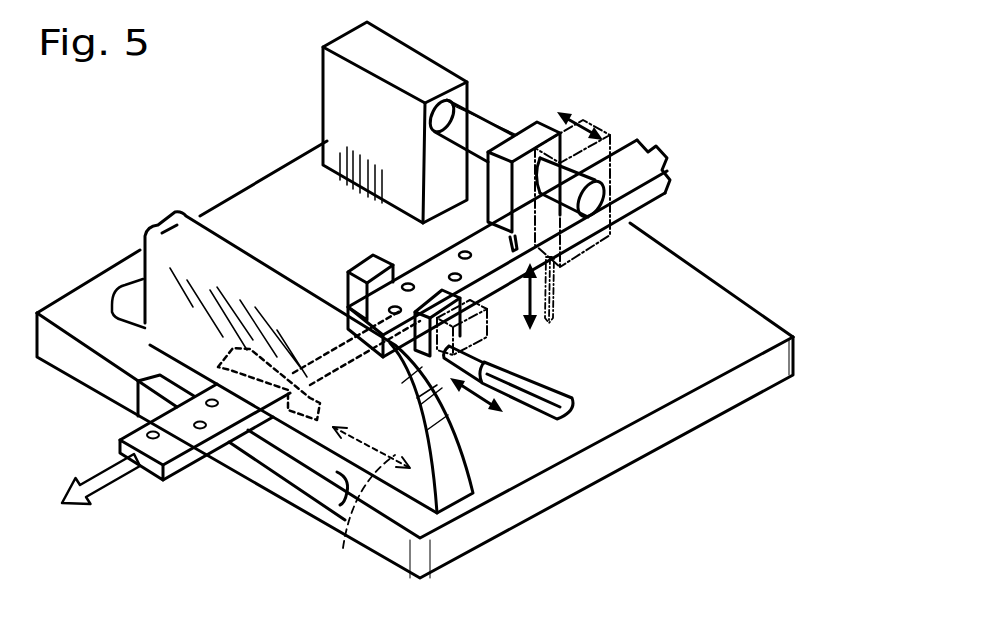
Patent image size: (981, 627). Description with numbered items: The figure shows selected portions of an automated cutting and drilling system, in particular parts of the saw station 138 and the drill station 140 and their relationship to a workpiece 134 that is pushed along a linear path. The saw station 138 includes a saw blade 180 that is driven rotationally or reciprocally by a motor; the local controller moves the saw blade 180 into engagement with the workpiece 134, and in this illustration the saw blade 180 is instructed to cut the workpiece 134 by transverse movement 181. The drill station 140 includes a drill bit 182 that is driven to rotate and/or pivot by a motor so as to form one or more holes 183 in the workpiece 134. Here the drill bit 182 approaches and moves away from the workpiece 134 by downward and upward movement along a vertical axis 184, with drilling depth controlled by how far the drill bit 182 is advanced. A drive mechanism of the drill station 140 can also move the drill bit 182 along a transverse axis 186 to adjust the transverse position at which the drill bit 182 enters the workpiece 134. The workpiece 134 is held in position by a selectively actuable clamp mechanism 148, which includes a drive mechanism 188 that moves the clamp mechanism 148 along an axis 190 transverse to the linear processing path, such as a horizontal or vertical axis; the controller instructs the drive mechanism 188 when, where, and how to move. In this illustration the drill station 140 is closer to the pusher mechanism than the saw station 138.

The workpiece 134 is at (380, 300).
The saw station 138 is at (140, 228).
The drill station 140 is at (518, 82).
The clamp mechanism 148 is at (518, 346).
The saw blade 180 is at (325, 396).
The transverse movement 181 is at (359, 514).
The drill bit 182 is at (511, 246).
The holes 183 is at (452, 275).
The vertical axis 184 is at (532, 290).
The transverse axis 186 is at (586, 117).
The drive mechanism 188 is at (574, 373).
The axis 190 is at (470, 396).